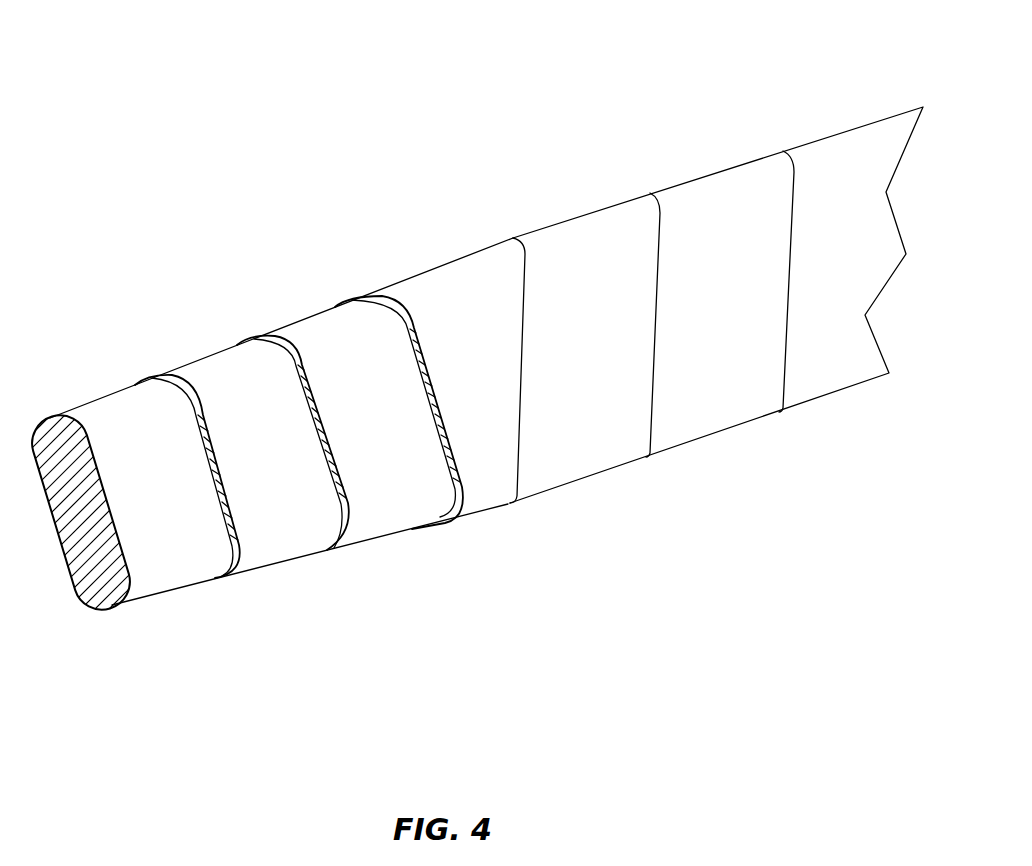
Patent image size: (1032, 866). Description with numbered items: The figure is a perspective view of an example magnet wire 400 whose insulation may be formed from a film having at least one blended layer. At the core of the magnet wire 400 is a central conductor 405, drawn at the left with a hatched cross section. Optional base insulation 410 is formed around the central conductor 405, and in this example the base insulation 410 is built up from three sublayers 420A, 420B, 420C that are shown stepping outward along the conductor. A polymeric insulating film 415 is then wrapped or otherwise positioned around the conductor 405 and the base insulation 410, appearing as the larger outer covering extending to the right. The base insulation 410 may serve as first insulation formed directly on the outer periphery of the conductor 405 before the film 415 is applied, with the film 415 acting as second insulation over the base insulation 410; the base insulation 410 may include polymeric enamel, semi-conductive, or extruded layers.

The magnet wire 400 is at (142, 78).
The central conductor 405 is at (64, 533).
The base insulation 410 is at (501, 227).
The polymeric insulating film 415 is at (573, 264).
The sublayer 420A is at (292, 512).
The sublayer 420B is at (387, 465).
The sublayer 420C is at (478, 482).